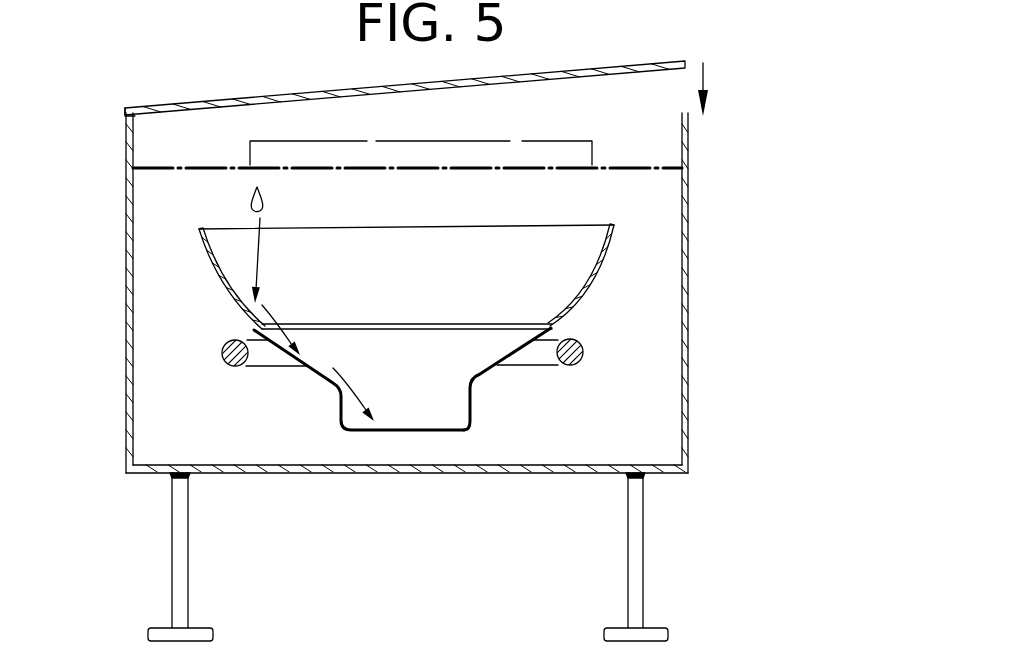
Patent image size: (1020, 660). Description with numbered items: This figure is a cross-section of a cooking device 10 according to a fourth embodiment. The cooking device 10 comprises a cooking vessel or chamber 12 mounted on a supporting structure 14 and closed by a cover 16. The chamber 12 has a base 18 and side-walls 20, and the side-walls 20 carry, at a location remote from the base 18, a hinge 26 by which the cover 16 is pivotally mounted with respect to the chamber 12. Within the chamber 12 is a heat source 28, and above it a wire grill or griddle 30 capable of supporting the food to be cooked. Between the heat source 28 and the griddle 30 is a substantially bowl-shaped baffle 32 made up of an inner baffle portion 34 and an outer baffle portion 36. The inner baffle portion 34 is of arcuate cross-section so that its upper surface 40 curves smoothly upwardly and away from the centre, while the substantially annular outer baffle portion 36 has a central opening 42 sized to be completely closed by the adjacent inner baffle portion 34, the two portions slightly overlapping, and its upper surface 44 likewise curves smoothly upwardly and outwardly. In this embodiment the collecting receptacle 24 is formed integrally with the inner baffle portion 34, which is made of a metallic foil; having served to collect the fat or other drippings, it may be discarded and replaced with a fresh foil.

The cooking device 10 is at (732, 222).
The cooking vessel or chamber 12 is at (688, 372).
The supporting structure 14 is at (635, 525).
The cover 16 is at (229, 100).
The base 18 is at (520, 460).
The side-walls 20 is at (127, 400).
The collecting receptacle 24 is at (338, 424).
The hinge 26 is at (128, 113).
The heat source 28 is at (585, 347).
The griddle 30 is at (158, 167).
The baffle 32 is at (214, 380).
The inner baffle portion 34 is at (495, 377).
The outer baffle portion 36 is at (600, 265).
The upper surface of inner baffle portion 40 is at (512, 362).
The central opening of outer baffle portion 42 is at (535, 322).
The upper surface of outer baffle portion 44 is at (580, 288).